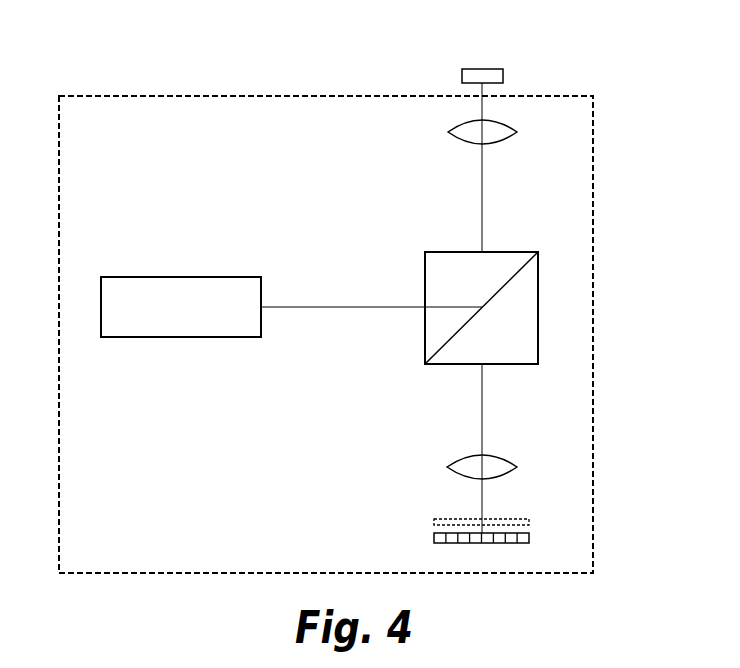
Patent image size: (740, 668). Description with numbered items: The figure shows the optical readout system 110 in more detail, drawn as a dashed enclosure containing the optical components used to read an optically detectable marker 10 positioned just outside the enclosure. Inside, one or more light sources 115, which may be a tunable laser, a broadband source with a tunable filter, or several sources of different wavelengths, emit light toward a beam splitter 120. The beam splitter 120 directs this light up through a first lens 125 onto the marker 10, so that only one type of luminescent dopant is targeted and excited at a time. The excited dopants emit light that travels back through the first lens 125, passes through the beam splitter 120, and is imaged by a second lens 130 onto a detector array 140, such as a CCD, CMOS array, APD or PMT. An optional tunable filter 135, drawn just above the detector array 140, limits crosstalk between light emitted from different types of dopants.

The optically detectable marker 10 is at (503, 78).
The optical readout system 110 is at (594, 162).
The light source 115 is at (155, 288).
The beam splitter 120 is at (432, 259).
The first lens 125 is at (458, 136).
The second lens 130 is at (447, 471).
The tunable filter 135 is at (520, 520).
The detector array 140 is at (434, 538).